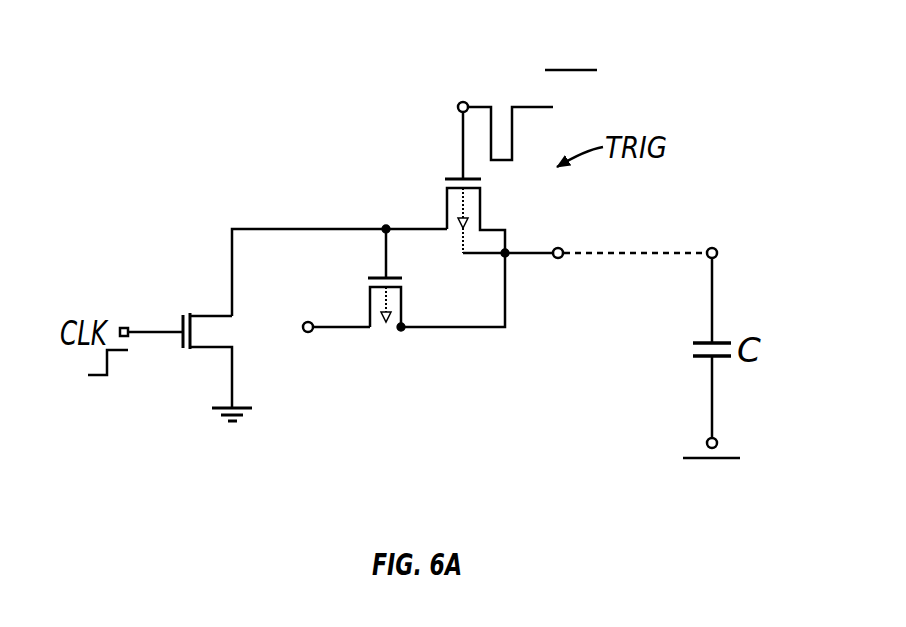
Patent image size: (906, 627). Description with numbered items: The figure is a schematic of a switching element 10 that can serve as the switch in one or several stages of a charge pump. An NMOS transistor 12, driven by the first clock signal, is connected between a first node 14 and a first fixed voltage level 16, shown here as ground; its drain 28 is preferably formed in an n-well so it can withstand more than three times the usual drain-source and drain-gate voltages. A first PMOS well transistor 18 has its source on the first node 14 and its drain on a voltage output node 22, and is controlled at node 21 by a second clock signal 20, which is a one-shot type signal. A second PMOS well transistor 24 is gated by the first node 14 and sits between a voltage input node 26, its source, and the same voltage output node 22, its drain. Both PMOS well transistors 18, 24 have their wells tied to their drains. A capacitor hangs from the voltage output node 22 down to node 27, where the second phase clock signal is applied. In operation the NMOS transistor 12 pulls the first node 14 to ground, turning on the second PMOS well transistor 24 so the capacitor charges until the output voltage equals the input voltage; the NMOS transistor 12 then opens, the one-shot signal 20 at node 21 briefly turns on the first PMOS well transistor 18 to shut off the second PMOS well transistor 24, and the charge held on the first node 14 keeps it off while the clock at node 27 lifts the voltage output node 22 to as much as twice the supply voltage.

The switching element 10 is at (712, 55).
The NMOS transistor 12 is at (215, 350).
The first node 14 is at (285, 225).
The first fixed voltage level 16 is at (232, 378).
The first PMOS well transistor 18 is at (447, 205).
The second clock signal 20 is at (540, 105).
The gate node of first PMOS well transistor 21 is at (452, 127).
The voltage output node 22 is at (560, 260).
The second PMOS well transistor 24 is at (402, 307).
The voltage input node 26 is at (310, 333).
The PHI2BAR clock node 27 is at (718, 441).
The drain of NMOS transistor 28 is at (200, 300).